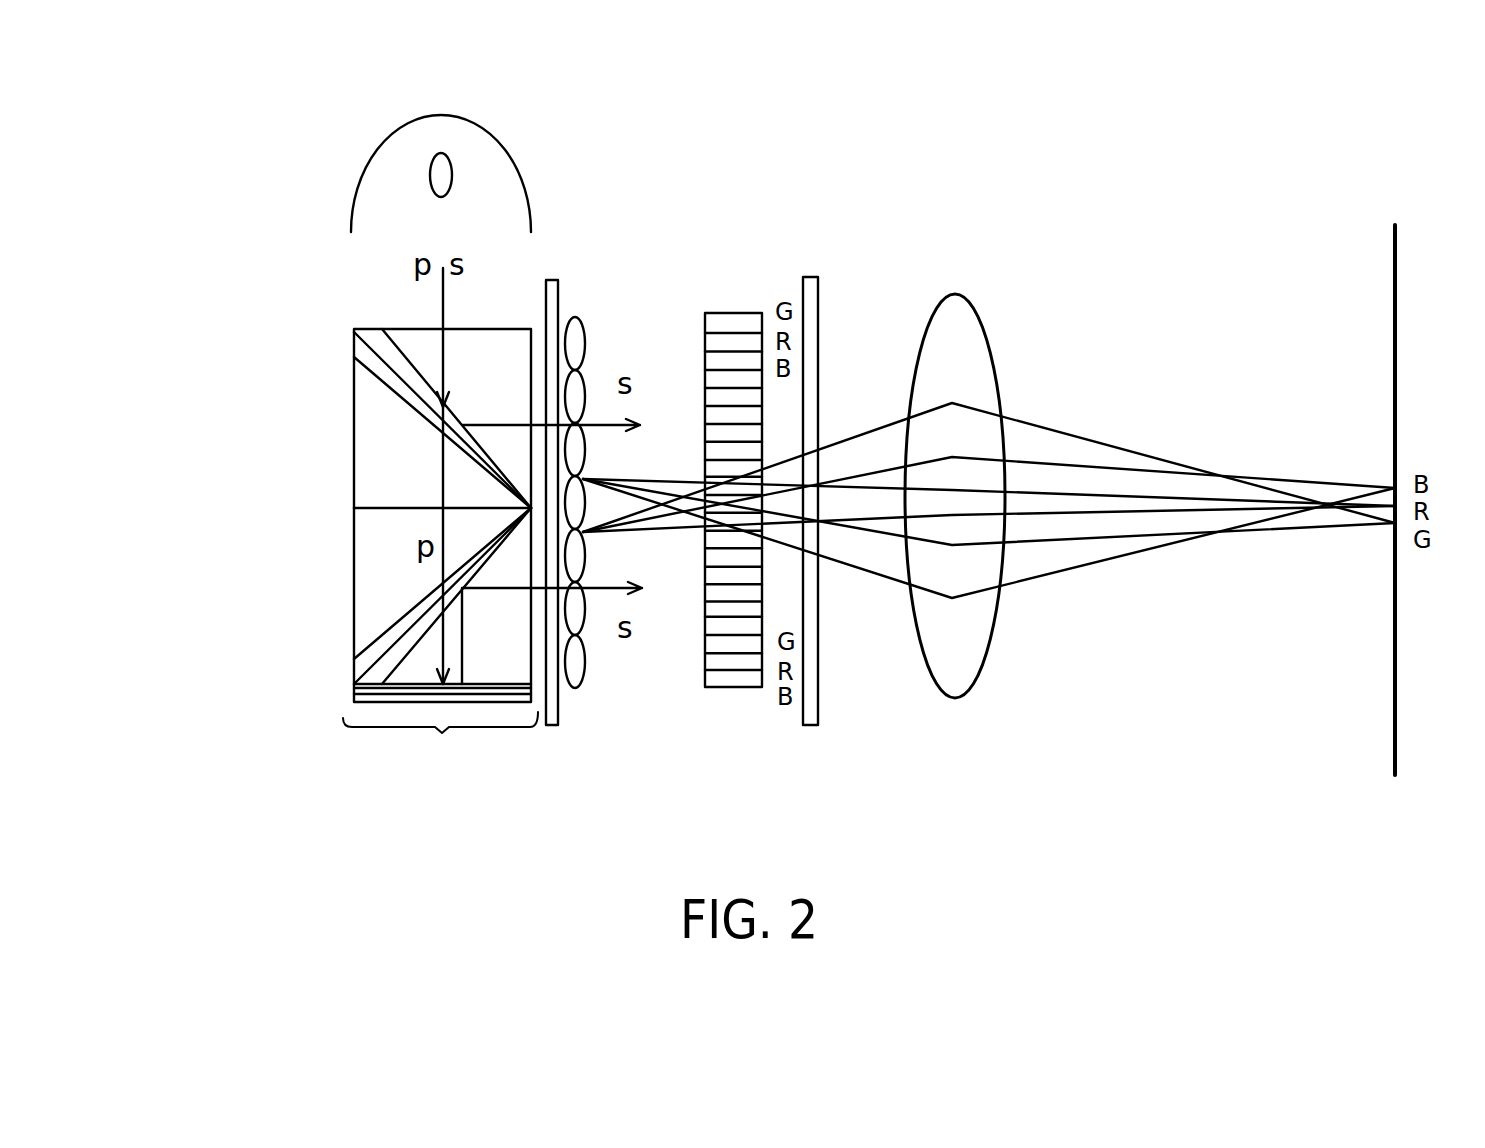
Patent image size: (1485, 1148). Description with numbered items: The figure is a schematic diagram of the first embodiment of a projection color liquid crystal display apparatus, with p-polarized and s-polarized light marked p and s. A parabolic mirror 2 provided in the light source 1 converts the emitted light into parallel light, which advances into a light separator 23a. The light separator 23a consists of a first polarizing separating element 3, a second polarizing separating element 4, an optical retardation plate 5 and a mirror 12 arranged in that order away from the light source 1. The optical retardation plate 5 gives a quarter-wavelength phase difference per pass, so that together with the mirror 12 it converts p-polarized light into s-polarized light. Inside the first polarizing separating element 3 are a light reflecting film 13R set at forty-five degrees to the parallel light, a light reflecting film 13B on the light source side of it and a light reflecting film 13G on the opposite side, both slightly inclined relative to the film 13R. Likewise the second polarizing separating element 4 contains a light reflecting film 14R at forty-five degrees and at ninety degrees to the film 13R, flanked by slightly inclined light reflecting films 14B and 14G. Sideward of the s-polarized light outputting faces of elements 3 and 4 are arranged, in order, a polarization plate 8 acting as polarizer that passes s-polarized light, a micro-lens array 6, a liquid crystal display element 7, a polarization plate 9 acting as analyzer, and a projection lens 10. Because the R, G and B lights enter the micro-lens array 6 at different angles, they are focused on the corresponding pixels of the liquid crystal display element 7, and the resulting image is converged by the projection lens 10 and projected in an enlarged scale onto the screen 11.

The light source 1 is at (430, 163).
The parabolic mirror 2 is at (523, 185).
The first polarizing separating element 3 is at (410, 340).
The second polarizing separating element 4 is at (368, 562).
The optical retardation plate 5 is at (353, 690).
The micro-lens array 6 is at (573, 340).
The liquid crystal display element 7 is at (753, 688).
The polarization plate 8 is at (555, 697).
The polarization plate 9 is at (818, 700).
The projection lens 10 is at (963, 348).
The screen 11 is at (1392, 298).
The mirror 12 is at (357, 698).
The light reflecting film 13B is at (350, 342).
The light reflecting film 13R is at (382, 368).
The light reflecting film 13G is at (400, 400).
The light reflecting film 14B is at (392, 623).
The light reflecting film 14R is at (392, 646).
The light reflecting film 14G is at (393, 667).
The light separator 23a is at (442, 742).